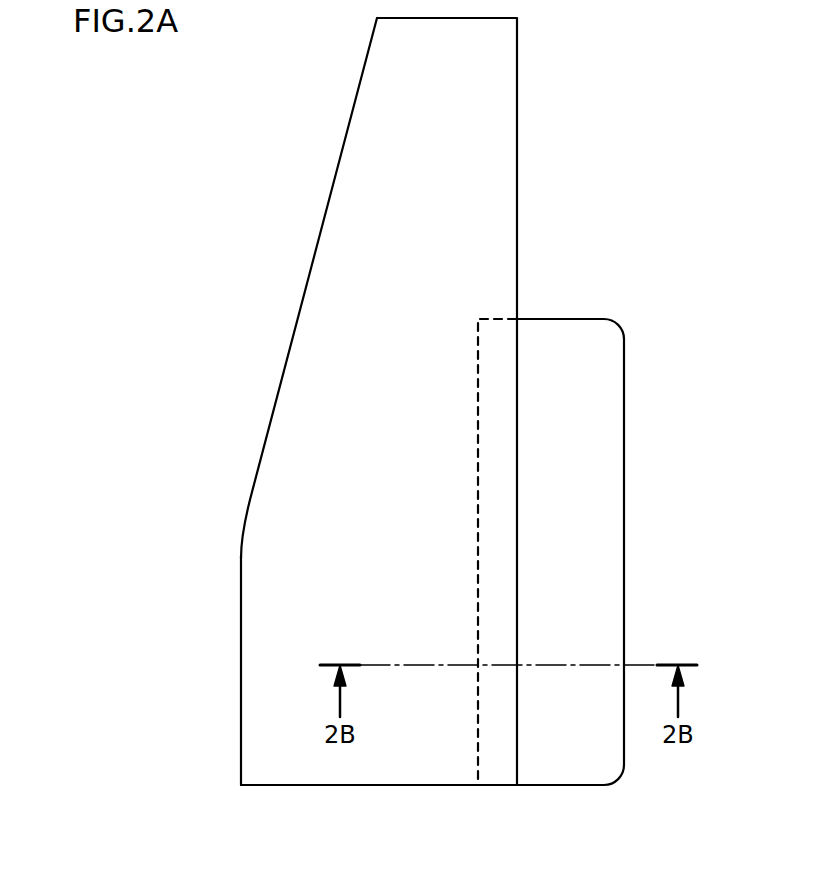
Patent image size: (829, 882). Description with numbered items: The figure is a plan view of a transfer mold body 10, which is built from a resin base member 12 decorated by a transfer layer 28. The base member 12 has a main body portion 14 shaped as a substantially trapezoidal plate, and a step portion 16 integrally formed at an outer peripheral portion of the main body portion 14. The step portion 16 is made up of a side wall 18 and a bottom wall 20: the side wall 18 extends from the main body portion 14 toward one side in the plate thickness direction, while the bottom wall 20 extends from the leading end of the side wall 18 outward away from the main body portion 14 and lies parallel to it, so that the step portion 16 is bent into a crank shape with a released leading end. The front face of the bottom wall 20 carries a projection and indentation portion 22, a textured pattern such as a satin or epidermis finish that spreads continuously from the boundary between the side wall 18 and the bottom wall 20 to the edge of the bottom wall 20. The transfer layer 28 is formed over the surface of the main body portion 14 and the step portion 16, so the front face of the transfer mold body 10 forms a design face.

The transfer mold body 10 is at (622, 158).
The base member 12 is at (240, 763).
The main body portion 14 is at (413, 785).
The step portion 16 is at (625, 398).
The side wall 18 is at (495, 768).
The bottom wall 20 is at (580, 785).
The projection and indentation portion 22 is at (608, 756).
The transfer layer 28 is at (282, 475).